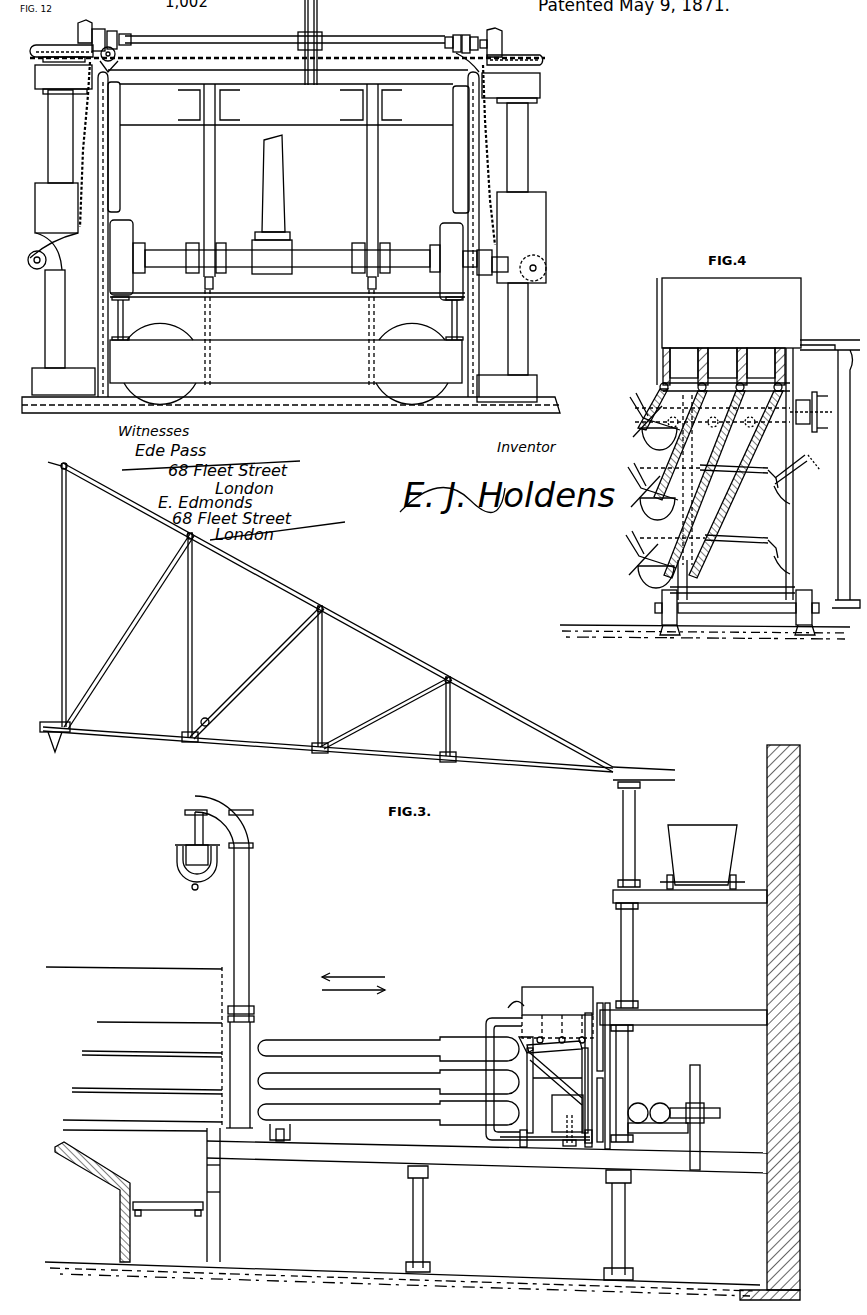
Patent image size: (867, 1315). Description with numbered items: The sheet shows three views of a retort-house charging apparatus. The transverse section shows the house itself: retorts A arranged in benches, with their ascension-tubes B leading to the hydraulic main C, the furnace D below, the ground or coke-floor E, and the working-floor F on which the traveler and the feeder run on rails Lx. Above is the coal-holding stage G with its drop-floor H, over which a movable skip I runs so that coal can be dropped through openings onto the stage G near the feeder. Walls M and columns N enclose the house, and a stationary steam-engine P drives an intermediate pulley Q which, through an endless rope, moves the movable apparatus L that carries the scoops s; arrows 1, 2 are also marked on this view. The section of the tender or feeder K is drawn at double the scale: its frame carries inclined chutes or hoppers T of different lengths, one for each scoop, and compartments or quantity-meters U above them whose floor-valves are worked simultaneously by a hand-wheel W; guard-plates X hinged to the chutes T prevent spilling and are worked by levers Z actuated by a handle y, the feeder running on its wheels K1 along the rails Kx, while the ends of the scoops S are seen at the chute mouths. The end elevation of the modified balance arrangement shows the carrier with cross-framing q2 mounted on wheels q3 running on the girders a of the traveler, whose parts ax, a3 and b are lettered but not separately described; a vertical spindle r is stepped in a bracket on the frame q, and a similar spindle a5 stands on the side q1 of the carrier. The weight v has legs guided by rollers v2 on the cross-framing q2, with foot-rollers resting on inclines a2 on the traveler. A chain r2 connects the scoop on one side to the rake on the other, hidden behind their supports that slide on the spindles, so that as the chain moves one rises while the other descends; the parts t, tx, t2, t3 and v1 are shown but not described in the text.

In FIG. 12, the rails Lx is at (291, 405).
In FIG. 3, the rails Lx is at (569, 1137).
In FIG. 12, the frame q is at (256, 231).
In FIG. 12, the side of the carrier q1 is at (511, 88).
In FIG. 12, the cross-framing q2 is at (335, 321).
In FIG. 12, the wheels q3 is at (286, 217).
In FIG. 12, the vertical spindle r is at (53, 229).
In FIG. 12, the chain or cord r2 is at (288, 153).
In FIG. 12, the vertical rod t is at (313, 42).
In FIG. 12, the horizontal rod tx is at (289, 38).
In FIG. 12, the end bracket t2 is at (320, 40).
In FIG. 12, the bracket plate t3 is at (74, 46).
In FIG. 12, the weight v is at (287, 91).
In FIG. 4, the weight v is at (725, 380).
In FIG. 12, the hanger rod v1 is at (290, 180).
In FIG. 12, the rollers v2 is at (292, 308).
In FIG. 12, the girders a is at (286, 318).
In FIG. 12, the carriage body ax is at (286, 361).
In FIG. 12, the inclines a2 is at (295, 284).
In FIG. 12, the lower rail a3 is at (287, 289).
In FIG. 12, the vertical spindle a5 is at (521, 239).
In FIG. 12, the wheel b is at (286, 363).
In FIG. 4, the tender or feeder K is at (729, 331).
In FIG. 3, the tender or feeder K is at (550, 1051).
In FIG. 4, the truck wheel K1 is at (737, 604).
In FIG. 3, the rails or trams Kx is at (432, 1141).
In FIG. 4, the quantity-meters or compartments U is at (724, 366).
In FIG. 4, the inclined chutes or hoppers T is at (710, 483).
In FIG. 4, the scoop S is at (657, 508).
In FIG. 4, the guard-plates X is at (650, 487).
In FIG. 4, the levers Z is at (712, 484).
In FIG. 4, the handle y is at (797, 464).
In FIG. 4, the hand-wheel W is at (809, 474).
In FIG. 3, the platform or stage G is at (388, 736).
In FIG. 3, the columns N is at (523, 1031).
In FIG. 3, the supply or drop-floor H is at (690, 892).
In FIG. 3, the hydraulic main C is at (197, 870).
In FIG. 3, the movable skip or truck I is at (702, 857).
In FIG. 3, the walls M is at (770, 1022).
In FIG. 3, the rising-pipes or ascension-tubes B is at (219, 962).
In FIG. 3, the retorts A is at (149, 1047).
In FIG. 3, the furnace D is at (176, 1195).
In FIG. 3, the working-floor or stage F is at (415, 1151).
In FIG. 3, the ground-floor or coke-floor E is at (402, 1279).
In FIG. 3, the direction arrow 1 is at (353, 972).
In FIG. 3, the direction arrow 2 is at (353, 994).
In FIG. 3, the scoops s is at (388, 1081).
In FIG. 3, the movable apparatus L is at (533, 1072).
In FIG. 3, the intermediate pulley Q is at (600, 1076).
In FIG. 3, the stationary steam-engine P is at (674, 1117).